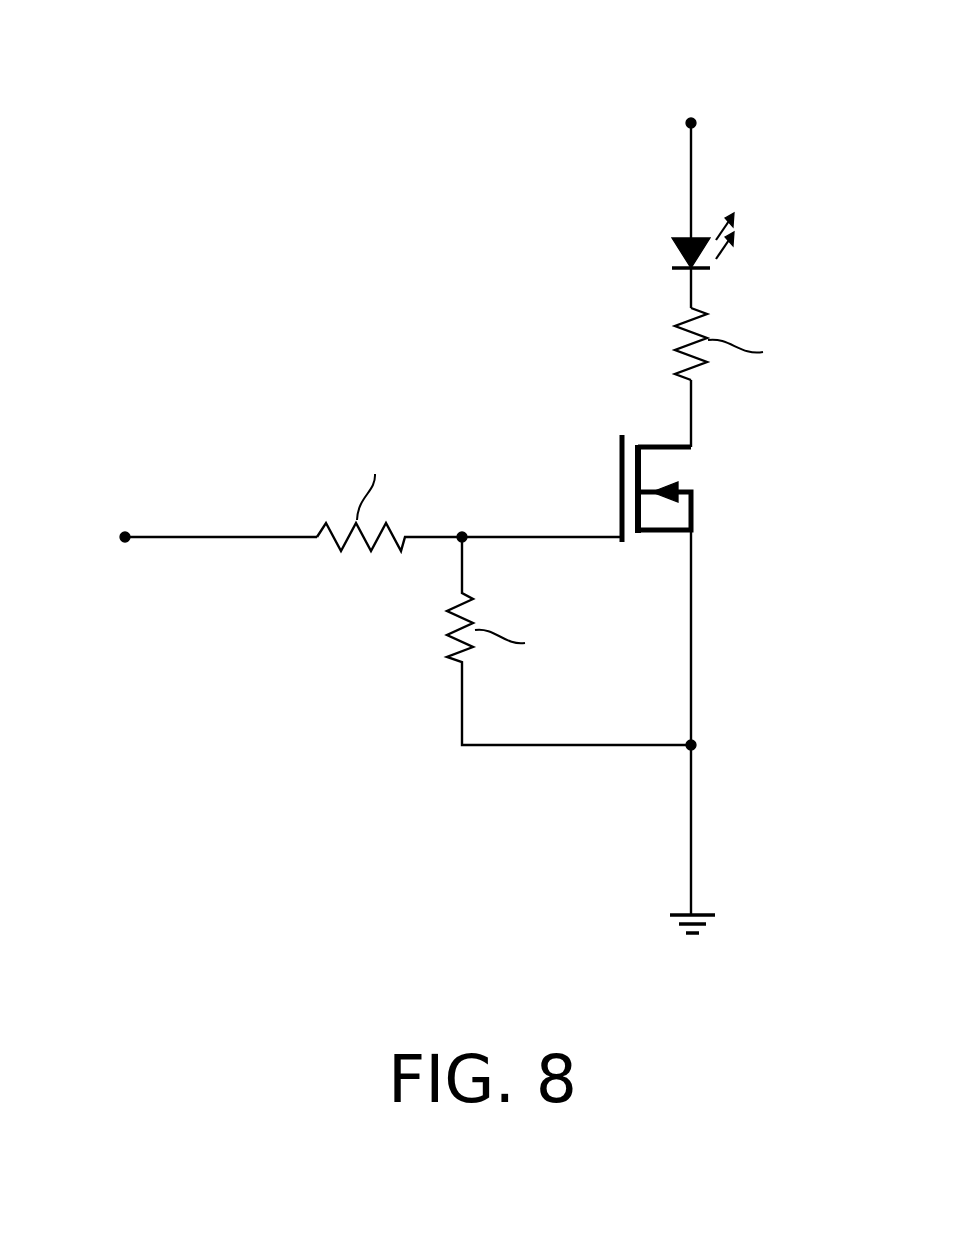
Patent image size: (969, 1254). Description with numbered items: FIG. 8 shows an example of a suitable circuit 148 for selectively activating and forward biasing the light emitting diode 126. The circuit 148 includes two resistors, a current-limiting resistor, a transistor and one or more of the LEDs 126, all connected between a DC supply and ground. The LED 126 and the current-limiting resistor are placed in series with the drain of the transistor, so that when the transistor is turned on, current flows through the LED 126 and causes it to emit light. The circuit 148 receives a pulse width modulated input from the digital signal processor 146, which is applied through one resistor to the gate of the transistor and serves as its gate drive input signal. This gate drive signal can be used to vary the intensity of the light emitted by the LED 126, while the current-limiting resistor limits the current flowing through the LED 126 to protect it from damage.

The circuit 148 is at (506, 96).
The light emitting diode 126 is at (662, 253).
The digital signal processor 146 is at (177, 513).